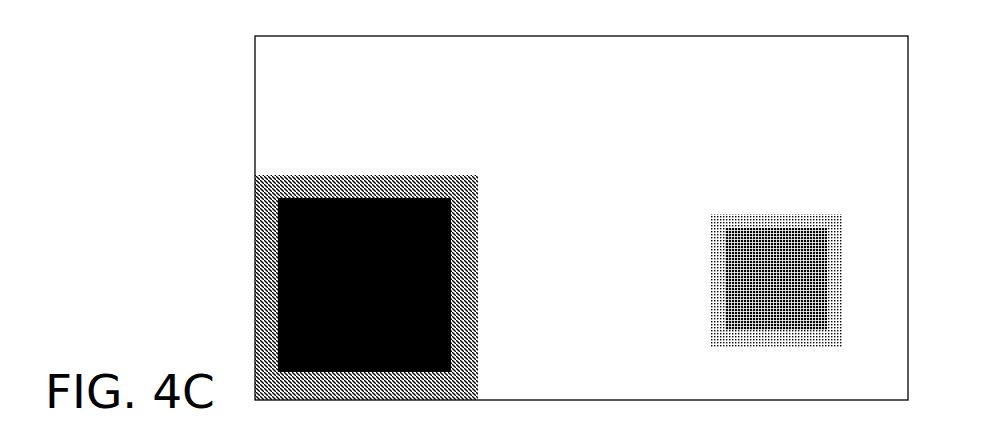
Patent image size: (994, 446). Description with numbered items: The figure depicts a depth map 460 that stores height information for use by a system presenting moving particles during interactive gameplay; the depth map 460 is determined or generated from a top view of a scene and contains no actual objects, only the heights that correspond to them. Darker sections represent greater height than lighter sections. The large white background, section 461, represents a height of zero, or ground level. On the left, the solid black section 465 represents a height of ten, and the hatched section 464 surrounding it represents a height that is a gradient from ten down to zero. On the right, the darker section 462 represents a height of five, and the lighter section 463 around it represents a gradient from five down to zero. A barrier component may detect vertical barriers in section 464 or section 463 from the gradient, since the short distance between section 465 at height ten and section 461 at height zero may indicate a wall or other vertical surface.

The depth map 460 is at (469, 218).
The section 461 is at (270, 131).
The section 462 is at (716, 268).
The section 463 is at (717, 311).
The section 464 is at (266, 208).
The section 465 is at (272, 273).